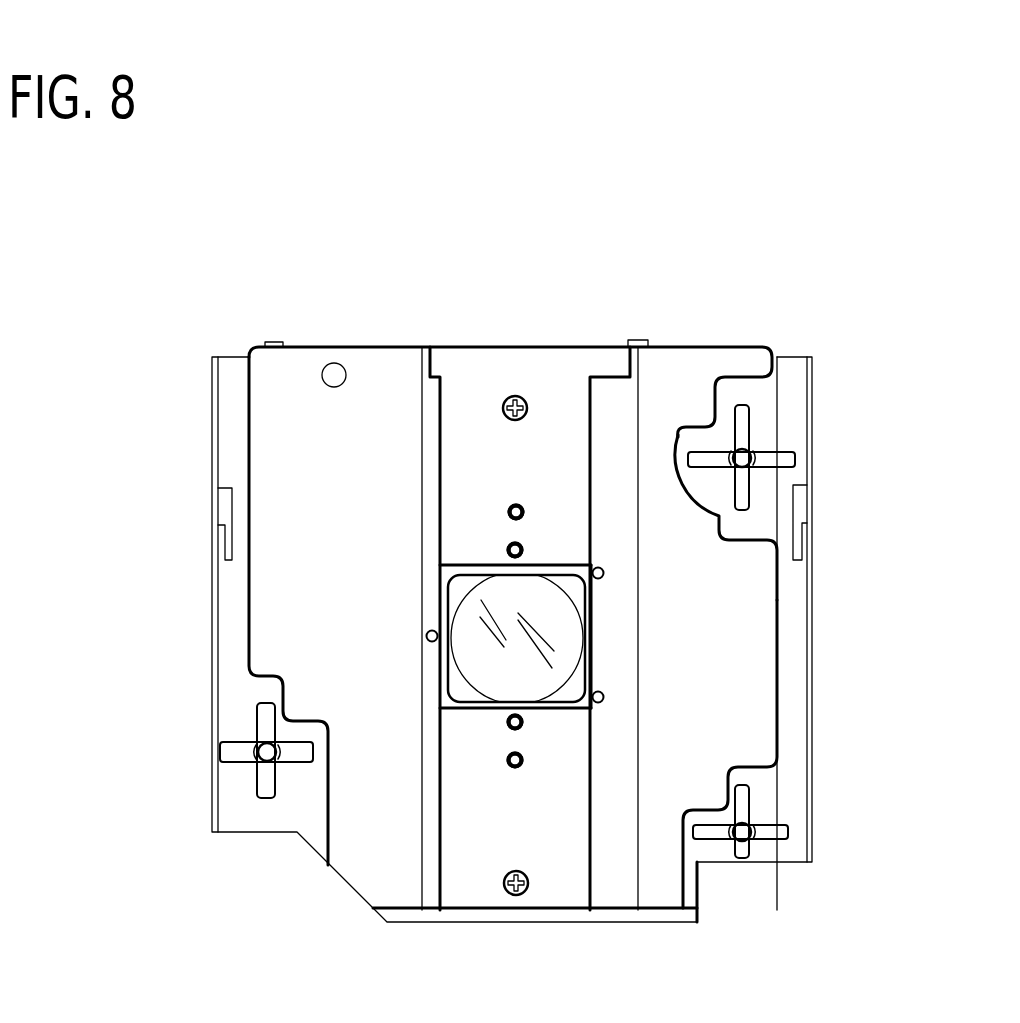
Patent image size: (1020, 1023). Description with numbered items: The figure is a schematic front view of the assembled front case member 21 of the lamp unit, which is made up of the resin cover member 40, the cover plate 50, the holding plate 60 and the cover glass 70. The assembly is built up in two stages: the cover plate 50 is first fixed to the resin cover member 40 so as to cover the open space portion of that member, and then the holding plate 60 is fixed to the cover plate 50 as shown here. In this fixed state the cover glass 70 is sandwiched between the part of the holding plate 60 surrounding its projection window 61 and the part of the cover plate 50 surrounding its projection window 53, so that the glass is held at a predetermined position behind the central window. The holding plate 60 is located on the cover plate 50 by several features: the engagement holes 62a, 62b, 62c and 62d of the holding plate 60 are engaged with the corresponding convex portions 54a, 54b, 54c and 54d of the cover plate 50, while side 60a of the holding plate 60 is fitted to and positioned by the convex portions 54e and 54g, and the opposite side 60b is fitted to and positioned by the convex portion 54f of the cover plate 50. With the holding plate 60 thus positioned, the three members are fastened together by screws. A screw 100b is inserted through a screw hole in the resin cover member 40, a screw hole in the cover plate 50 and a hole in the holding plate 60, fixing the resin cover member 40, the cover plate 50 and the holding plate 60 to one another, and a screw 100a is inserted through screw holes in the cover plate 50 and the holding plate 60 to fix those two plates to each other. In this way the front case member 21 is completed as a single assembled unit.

The front case member 21 is at (509, 184).
The resin cover member 40 is at (303, 815).
The cover plate 50 is at (666, 358).
The projection window 53 is at (594, 590).
The convex portion 54a is at (517, 502).
The convex portion 54b is at (522, 542).
The convex portion 54c is at (523, 723).
The convex portion 54d is at (508, 762).
The convex portion 54e is at (605, 573).
The convex portion 54f is at (427, 635).
The convex portion 54g is at (605, 700).
The holding plate 60 is at (512, 357).
The side 60a is at (594, 640).
The side 60b is at (440, 678).
The projection window 61 is at (594, 683).
The engagement hole 62a is at (508, 504).
The engagement hole 62b is at (508, 542).
The engagement hole 62c is at (507, 724).
The engagement hole 62d is at (523, 762).
The cover glass 70 is at (465, 617).
The screw 100a is at (522, 396).
The screw 100b is at (510, 895).